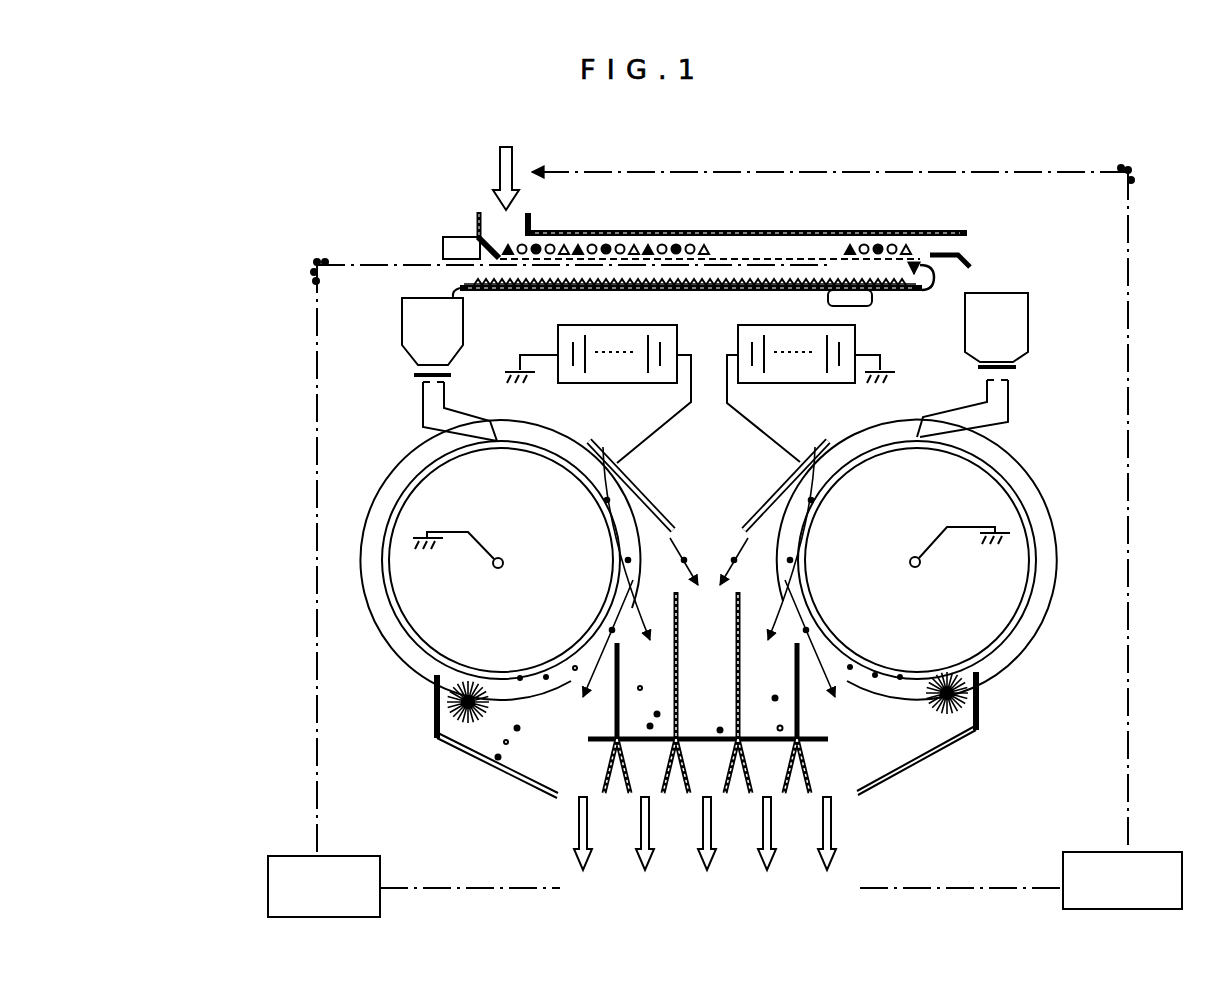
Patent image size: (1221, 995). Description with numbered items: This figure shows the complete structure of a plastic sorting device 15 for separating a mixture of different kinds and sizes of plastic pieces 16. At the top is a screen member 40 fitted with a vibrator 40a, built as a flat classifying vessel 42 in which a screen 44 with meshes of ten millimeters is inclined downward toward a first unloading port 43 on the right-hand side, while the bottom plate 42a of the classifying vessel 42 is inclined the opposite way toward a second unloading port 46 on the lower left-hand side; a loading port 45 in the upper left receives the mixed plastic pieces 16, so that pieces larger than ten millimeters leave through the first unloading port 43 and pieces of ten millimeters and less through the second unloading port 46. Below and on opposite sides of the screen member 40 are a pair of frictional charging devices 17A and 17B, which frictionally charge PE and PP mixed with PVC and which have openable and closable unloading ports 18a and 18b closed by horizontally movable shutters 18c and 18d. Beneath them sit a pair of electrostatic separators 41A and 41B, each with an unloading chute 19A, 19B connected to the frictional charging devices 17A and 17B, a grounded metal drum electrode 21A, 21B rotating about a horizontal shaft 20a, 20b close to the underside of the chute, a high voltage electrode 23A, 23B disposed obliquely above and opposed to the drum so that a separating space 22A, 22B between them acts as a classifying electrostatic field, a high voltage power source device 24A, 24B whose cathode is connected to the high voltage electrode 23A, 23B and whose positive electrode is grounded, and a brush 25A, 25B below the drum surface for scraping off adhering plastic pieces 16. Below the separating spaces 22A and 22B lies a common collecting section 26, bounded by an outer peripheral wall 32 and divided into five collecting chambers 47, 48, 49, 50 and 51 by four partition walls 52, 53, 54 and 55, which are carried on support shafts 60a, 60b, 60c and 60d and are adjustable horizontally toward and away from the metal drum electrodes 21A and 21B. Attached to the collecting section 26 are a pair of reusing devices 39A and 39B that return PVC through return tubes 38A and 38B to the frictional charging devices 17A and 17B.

The plastic sorting device 15 is at (1070, 393).
The plastic pieces 16 is at (500, 175).
The frictional charging device 17A is at (1015, 320).
The frictional charging device 17B is at (402, 316).
The unloading port 18a is at (1010, 366).
The unloading port 18b is at (410, 372).
The shutter 18c is at (980, 369).
The shutter 18d is at (448, 378).
The unloading chute 19A is at (1005, 428).
The unloading chute 19B is at (421, 405).
The horizontal shaft 20a is at (913, 567).
The horizontal shaft 20b is at (495, 569).
The metal drum electrode 21A is at (1032, 601).
The metal drum electrode 21B is at (397, 623).
The separating space 22A is at (823, 470).
The separating space 22B is at (600, 474).
The high voltage electrode 23A is at (780, 477).
The high voltage electrode 23B is at (633, 477).
The high voltage power source device 24A is at (852, 338).
The high voltage power source device 24B is at (562, 338).
The brush 25A is at (985, 682).
The brush 25B is at (452, 723).
The collecting section 26 is at (680, 812).
The outer peripheral wall 32 is at (433, 700).
The return tube 38A is at (1131, 676).
The return tube 38B is at (398, 888).
The reusing device 39A is at (1085, 860).
The reusing device 39B is at (313, 862).
The screen member 40 is at (717, 229).
The vibrator 40a is at (455, 242).
The electrostatic separator 41A is at (1052, 483).
The electrostatic separator 41B is at (392, 437).
The classifying vessel 42 is at (672, 232).
The bottom plate 42a is at (672, 290).
The first unloading port 43 is at (965, 262).
The screen 44 is at (797, 255).
The loading port 45 is at (517, 228).
The second unloading port 46 is at (460, 278).
The collecting chamber 47 is at (508, 760).
The collecting chamber 48 is at (670, 675).
The collecting chamber 49 is at (745, 711).
The collecting chamber 50 is at (787, 675).
The collecting chamber 51 is at (928, 738).
The partition wall 52 is at (618, 726).
The partition wall 53 is at (678, 690).
The partition wall 54 is at (740, 712).
The partition wall 55 is at (800, 705).
The support shaft 60a is at (637, 748).
The support shaft 60b is at (683, 758).
The support shaft 60c is at (748, 762).
The support shaft 60d is at (802, 745).